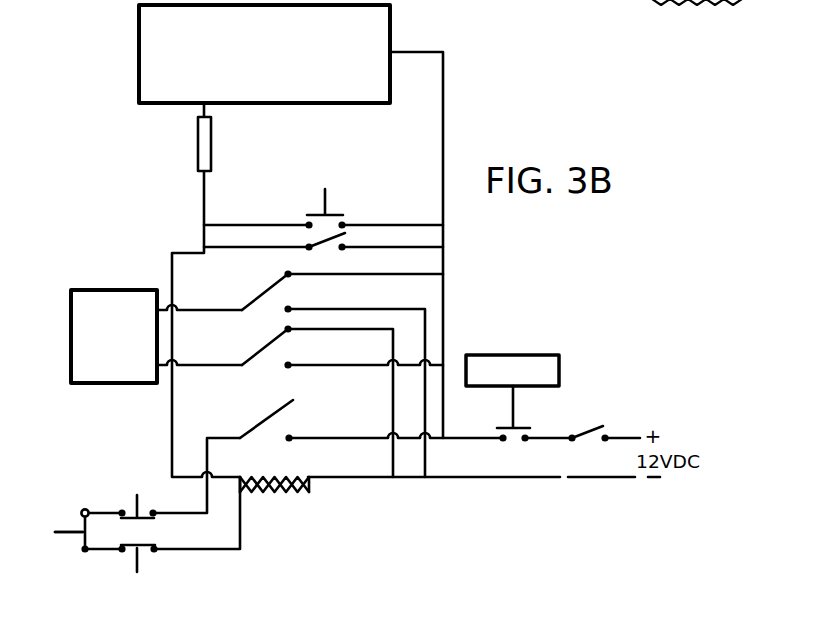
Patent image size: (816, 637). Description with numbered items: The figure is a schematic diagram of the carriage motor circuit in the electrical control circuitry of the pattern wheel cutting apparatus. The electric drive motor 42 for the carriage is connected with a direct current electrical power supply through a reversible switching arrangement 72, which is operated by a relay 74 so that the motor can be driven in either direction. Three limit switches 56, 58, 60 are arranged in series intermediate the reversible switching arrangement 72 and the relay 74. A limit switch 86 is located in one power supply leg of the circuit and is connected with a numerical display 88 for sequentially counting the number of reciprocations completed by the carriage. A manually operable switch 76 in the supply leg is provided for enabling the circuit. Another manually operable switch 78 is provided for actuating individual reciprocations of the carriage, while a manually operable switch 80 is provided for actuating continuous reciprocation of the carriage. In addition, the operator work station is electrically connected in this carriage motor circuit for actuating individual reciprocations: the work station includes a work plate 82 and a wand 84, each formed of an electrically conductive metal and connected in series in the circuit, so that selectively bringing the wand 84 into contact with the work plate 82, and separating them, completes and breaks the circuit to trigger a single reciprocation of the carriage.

The work plate 82 is at (146, 59).
The wand 84 is at (197, 129).
The manually operable switch 78 is at (322, 195).
The manually operable switch 80 is at (330, 241).
The electric drive motor 42 is at (97, 302).
The reversible switching arrangement 72 is at (224, 377).
The relay 74 is at (293, 493).
The limit switch 58 is at (132, 501).
The limit switch 60 is at (140, 566).
The limit switch 56 is at (62, 531).
The numerical display 88 is at (520, 355).
The limit switch 86 is at (516, 417).
The manually operable switch 76 is at (588, 427).